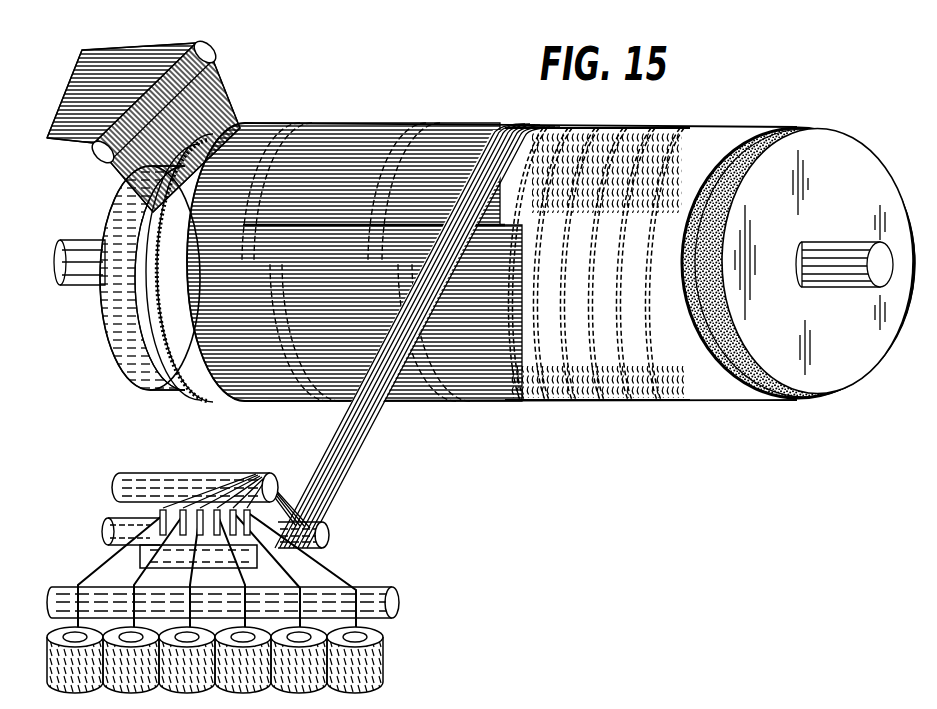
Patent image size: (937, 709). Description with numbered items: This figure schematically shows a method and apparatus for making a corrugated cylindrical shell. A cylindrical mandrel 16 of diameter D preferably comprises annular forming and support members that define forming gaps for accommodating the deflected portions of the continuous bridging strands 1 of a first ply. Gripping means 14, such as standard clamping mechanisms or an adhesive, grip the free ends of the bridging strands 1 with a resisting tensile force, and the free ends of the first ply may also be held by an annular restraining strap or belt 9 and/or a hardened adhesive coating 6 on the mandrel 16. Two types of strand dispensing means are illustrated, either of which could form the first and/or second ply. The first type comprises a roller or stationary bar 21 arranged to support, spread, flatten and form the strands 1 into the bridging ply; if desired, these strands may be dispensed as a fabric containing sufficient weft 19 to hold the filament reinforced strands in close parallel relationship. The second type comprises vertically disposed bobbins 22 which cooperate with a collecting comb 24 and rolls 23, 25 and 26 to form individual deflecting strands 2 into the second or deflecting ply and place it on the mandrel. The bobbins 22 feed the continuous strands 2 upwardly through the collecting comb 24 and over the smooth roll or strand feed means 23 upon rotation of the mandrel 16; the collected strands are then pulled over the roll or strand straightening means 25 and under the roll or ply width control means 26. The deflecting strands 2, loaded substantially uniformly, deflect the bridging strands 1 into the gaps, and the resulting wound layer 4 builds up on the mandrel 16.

The bridging strands 1 is at (212, 98).
The deflecting strands 2 is at (365, 430).
The wound yarn layer 4 is at (676, 410).
The hardened adhesive coating 6 is at (780, 125).
The annular restraining strap 9 is at (218, 138).
The gripping means 14 is at (225, 398).
The cylindrical mandrel 16 is at (833, 160).
The weft 19 is at (143, 50).
The roller or stationary bar 21 is at (218, 47).
The bobbins 22 is at (380, 663).
The strand feed means 23 is at (400, 604).
The collecting comb 24 is at (120, 542).
The strand straightening means 25 is at (118, 488).
The ply width control means 26 is at (330, 538).